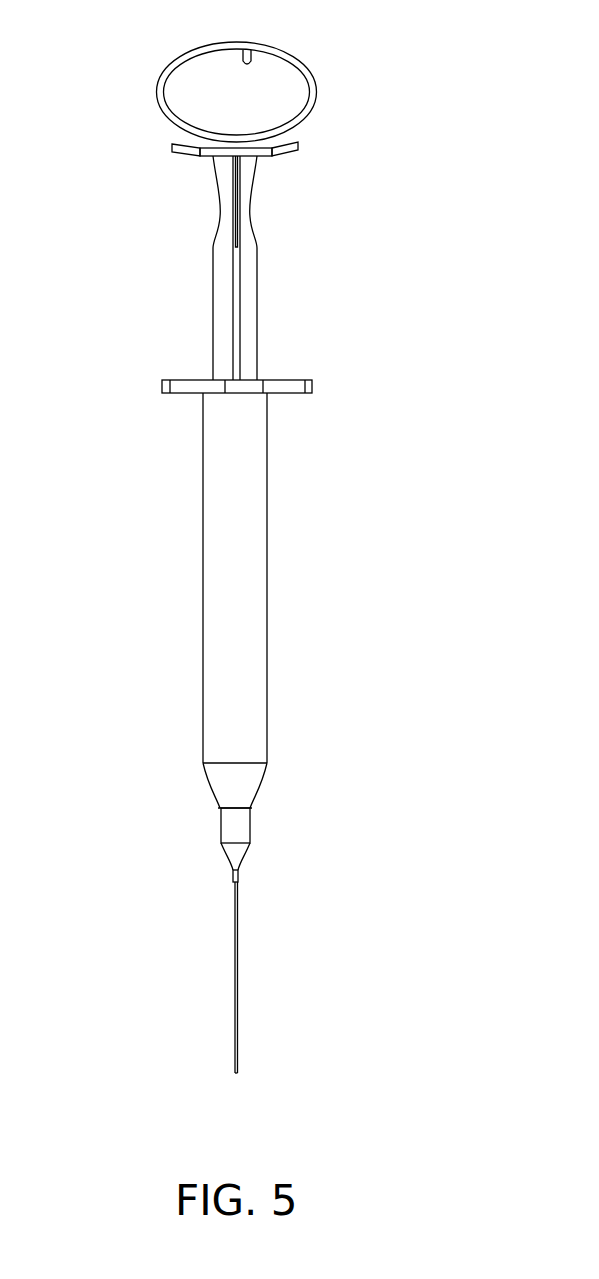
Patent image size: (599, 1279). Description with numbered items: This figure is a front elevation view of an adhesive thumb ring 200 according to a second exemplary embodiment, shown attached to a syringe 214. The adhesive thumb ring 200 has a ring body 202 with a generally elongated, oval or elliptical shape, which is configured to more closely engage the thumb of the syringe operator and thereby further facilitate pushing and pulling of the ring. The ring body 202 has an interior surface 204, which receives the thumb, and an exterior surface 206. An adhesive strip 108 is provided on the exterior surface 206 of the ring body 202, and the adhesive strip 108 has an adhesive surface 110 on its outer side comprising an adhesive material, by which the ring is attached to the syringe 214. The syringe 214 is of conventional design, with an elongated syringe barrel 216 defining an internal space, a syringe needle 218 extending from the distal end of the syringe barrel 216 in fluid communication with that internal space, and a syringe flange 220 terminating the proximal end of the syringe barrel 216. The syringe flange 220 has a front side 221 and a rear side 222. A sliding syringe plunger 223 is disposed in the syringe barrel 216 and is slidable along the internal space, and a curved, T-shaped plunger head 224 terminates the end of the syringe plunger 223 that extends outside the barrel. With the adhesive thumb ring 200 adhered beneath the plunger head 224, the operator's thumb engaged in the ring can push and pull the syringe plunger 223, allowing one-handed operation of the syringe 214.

The adhesive thumb ring 200 is at (219, 72).
The ring body 202 is at (302, 62).
The interior surface 204 is at (250, 60).
The exterior surface 206 is at (157, 100).
The adhesive strip 108 is at (298, 146).
The adhesive surface 110 is at (260, 157).
The plunger head 224 is at (178, 158).
The syringe plunger 223 is at (218, 252).
The rear side 222 is at (179, 380).
The syringe flange 220 is at (196, 377).
The front side 221 is at (190, 394).
The syringe barrel 216 is at (223, 505).
The syringe 214 is at (187, 733).
The syringe needle 218 is at (240, 1030).